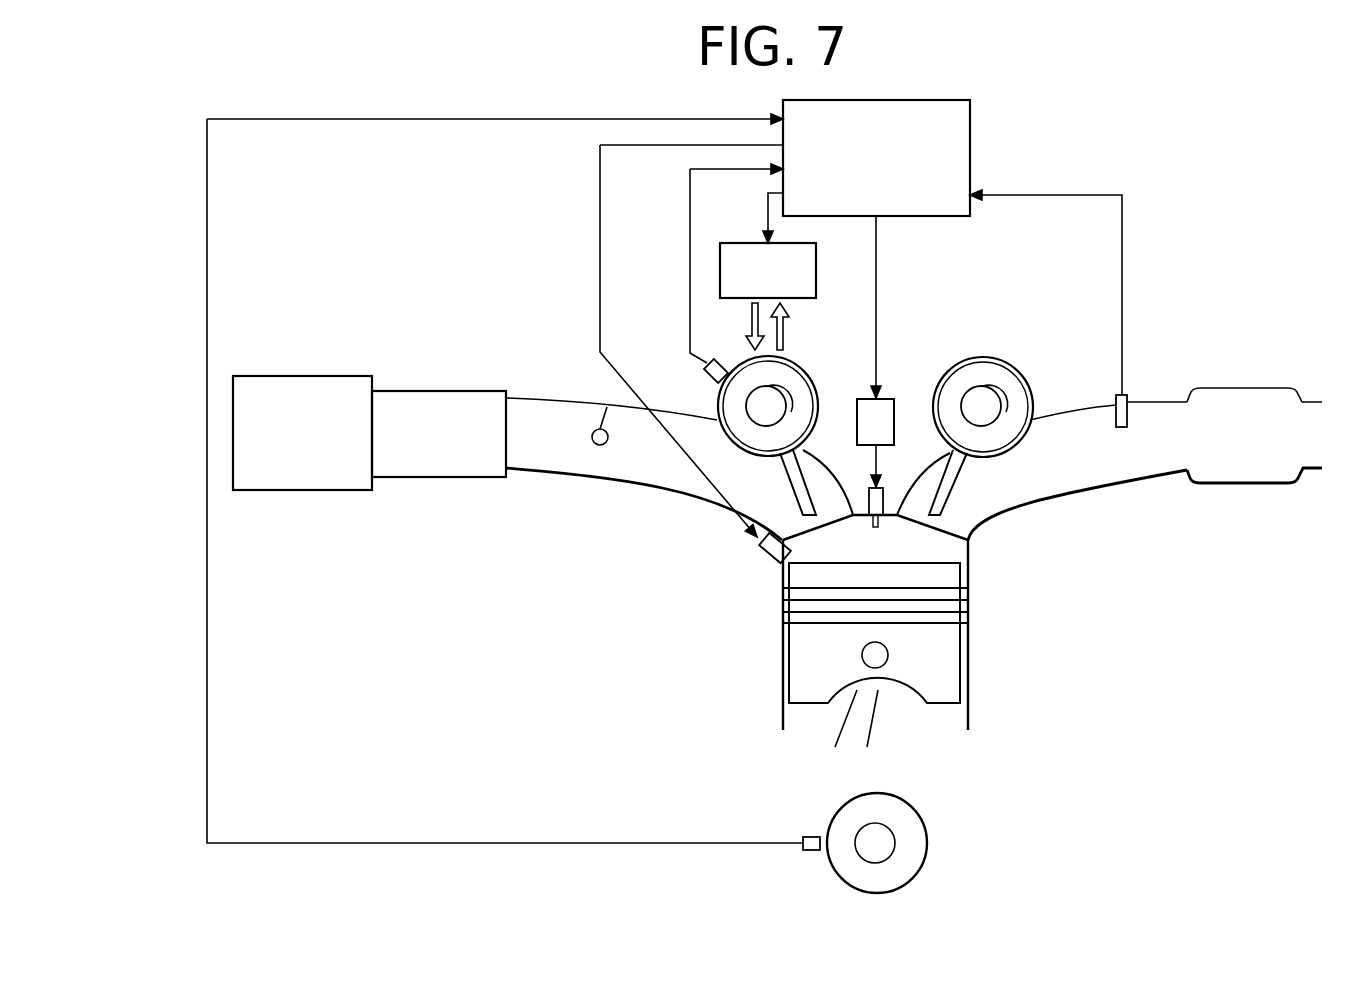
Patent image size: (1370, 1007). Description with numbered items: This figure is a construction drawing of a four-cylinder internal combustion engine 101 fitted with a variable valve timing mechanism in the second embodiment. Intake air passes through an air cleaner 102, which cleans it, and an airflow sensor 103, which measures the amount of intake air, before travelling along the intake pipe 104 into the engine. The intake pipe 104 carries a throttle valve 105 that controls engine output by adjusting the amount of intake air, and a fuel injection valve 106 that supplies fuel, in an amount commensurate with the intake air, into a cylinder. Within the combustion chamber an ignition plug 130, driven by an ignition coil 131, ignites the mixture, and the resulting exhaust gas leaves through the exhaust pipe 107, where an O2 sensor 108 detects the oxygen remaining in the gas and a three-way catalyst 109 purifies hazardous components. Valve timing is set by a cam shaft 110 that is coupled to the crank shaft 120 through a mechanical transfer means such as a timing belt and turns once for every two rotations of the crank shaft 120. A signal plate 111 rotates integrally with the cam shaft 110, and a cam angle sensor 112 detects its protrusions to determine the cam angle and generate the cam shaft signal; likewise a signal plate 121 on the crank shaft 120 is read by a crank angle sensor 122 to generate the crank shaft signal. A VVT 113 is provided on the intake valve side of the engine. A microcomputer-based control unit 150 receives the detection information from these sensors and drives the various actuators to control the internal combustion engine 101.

The internal combustion engine 101 is at (970, 652).
The air cleaner 102 is at (352, 376).
The airflow sensor 103 is at (475, 391).
The intake pipe 104 is at (540, 470).
The throttle valve 105 is at (600, 445).
The fuel injection valve 106 is at (765, 557).
The exhaust pipe 107 is at (1108, 482).
The O2 sensor 108 is at (1125, 396).
The three-way catalyst 109 is at (1255, 483).
The cam shaft 110 is at (790, 400).
The signal plate 111 is at (717, 400).
The cam angle sensor 112 is at (712, 361).
The variable valve timing mechanism (VVT) 113 is at (722, 243).
The crank shaft 120 is at (895, 845).
The signal plate 121 is at (927, 830).
The crank angle sensor 122 is at (803, 837).
The ignition plug 130 is at (881, 490).
The ignition coil 131 is at (880, 398).
The control unit 150 is at (970, 122).